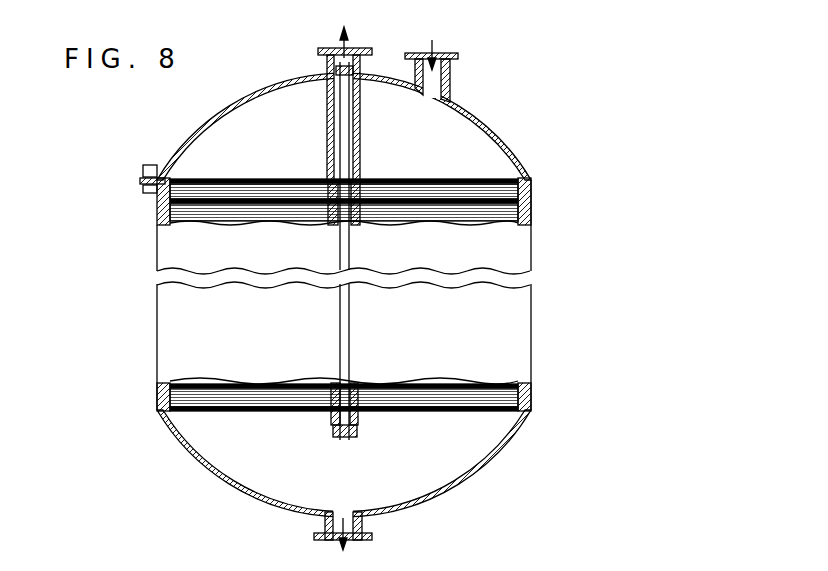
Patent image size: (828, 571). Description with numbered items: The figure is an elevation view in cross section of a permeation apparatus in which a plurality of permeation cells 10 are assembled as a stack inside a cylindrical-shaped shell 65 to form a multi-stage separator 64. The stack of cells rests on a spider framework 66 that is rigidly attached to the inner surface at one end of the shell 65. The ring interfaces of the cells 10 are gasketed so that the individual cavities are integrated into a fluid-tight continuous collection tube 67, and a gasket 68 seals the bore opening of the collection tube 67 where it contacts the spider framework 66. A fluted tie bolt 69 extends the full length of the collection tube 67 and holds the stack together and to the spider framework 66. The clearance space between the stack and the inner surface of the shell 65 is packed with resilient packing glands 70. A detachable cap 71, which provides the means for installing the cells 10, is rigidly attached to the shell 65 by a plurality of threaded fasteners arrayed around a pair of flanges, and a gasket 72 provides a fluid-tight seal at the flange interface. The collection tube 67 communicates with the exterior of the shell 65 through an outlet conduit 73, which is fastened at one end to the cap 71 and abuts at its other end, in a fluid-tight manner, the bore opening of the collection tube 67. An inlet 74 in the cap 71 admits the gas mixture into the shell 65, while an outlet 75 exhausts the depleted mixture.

The permeation cell 10 is at (412, 192).
The multi-stage separator 64 is at (392, 124).
The shell 65 is at (532, 306).
The spider framework 66 is at (268, 412).
The collection tube 67 is at (331, 218).
The gasket 68 is at (332, 428).
The fluted tie bolt 69 is at (338, 116).
The resilient packing glands 70 is at (533, 200).
The detachable cap 71 is at (487, 126).
The gasket 72 is at (140, 180).
The outlet conduit 73 is at (327, 161).
The inlet 74 is at (452, 88).
The outlet 75 is at (372, 539).